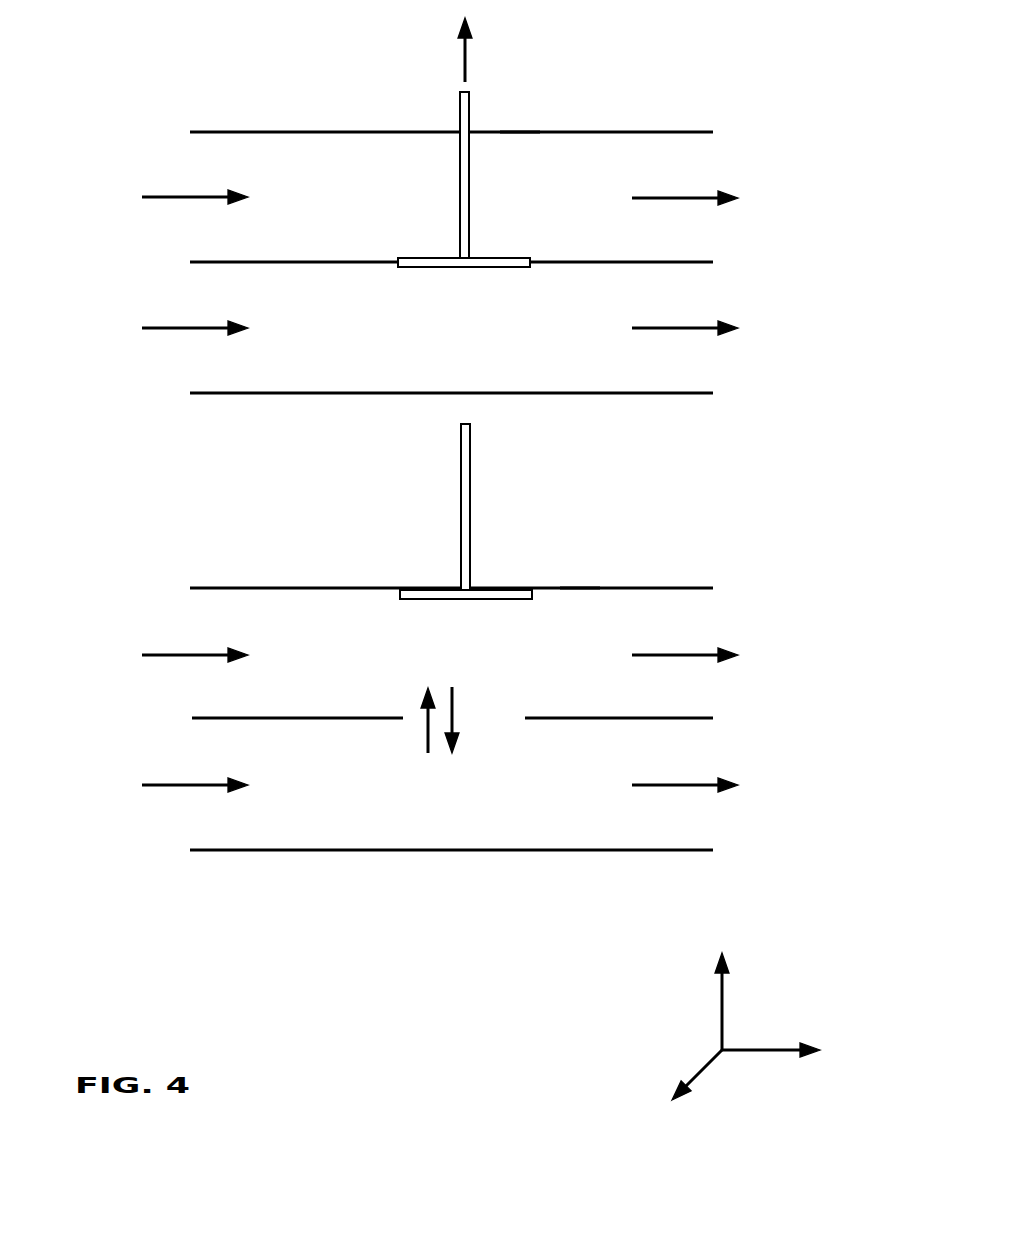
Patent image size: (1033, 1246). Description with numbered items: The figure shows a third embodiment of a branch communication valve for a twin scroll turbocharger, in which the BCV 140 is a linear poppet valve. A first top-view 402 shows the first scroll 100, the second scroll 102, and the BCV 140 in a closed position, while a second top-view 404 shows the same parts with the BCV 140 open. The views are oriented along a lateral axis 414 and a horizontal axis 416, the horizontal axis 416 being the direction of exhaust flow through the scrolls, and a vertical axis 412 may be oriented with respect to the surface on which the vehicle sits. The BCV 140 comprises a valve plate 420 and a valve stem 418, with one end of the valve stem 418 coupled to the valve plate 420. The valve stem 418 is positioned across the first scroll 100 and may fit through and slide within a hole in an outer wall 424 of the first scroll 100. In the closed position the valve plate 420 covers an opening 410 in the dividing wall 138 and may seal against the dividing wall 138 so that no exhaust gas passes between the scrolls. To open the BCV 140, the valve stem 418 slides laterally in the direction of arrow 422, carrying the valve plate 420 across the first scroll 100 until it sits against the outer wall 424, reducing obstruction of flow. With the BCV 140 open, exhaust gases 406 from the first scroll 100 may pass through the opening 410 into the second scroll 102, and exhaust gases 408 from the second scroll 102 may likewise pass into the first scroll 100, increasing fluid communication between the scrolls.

The first scroll 100 is at (238, 132).
The second scroll 102 is at (238, 393).
The dividing wall 138 is at (652, 262).
The branch communication valve 140 is at (472, 362).
The first top-view 402 is at (651, 66).
The second top-view 404 is at (652, 522).
The exhaust gases 406 is at (157, 197).
The exhaust gases 408 is at (157, 328).
The opening 410 is at (485, 742).
The vertical axis 412 is at (695, 1078).
The lateral axis 414 is at (725, 985).
The horizontal axis 416 is at (770, 1053).
The valve stem 418 is at (460, 218).
The valve plate 420 is at (428, 267).
The arrow 422 is at (463, 52).
The outer wall 424 is at (517, 133).